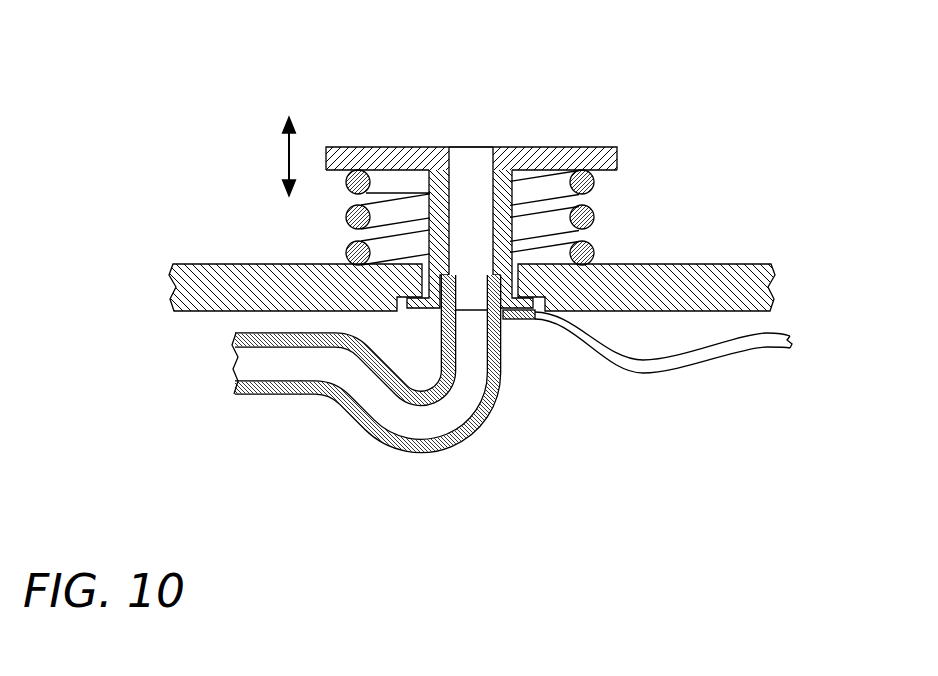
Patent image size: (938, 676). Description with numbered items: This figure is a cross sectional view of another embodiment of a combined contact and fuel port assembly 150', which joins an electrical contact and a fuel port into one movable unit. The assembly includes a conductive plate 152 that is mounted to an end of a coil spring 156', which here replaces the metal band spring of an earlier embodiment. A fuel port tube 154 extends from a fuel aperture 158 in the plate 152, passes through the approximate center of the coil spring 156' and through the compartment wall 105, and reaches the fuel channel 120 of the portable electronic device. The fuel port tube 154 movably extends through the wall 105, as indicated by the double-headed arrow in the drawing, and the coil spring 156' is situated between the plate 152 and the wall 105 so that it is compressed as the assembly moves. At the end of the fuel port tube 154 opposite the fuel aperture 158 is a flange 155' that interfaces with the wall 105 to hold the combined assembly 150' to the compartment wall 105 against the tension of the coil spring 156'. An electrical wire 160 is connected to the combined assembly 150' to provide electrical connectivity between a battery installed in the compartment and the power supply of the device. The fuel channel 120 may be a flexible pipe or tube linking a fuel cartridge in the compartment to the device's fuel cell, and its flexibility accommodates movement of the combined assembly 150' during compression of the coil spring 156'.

The combined contact and fuel port assembly 150' is at (258, 106).
The conductive plate 152 is at (593, 152).
The fuel port tube 154 is at (463, 193).
The fuel aperture 158 is at (475, 128).
The coil spring 156' is at (540, 217).
The compartment wall 105 is at (228, 268).
The fuel channel 120 is at (243, 368).
The flange 155' is at (447, 367).
The electrical wire 160 is at (653, 368).